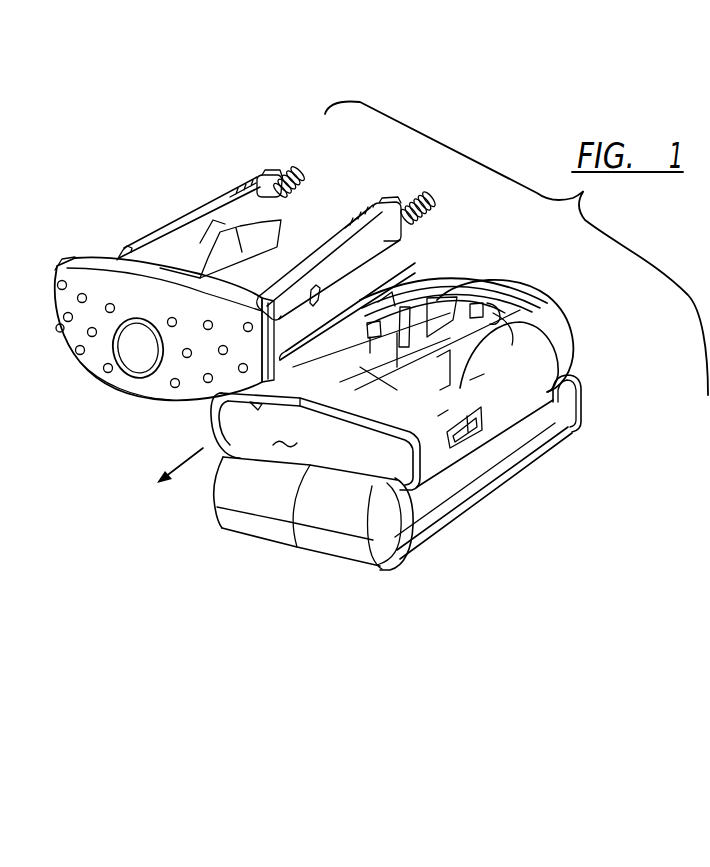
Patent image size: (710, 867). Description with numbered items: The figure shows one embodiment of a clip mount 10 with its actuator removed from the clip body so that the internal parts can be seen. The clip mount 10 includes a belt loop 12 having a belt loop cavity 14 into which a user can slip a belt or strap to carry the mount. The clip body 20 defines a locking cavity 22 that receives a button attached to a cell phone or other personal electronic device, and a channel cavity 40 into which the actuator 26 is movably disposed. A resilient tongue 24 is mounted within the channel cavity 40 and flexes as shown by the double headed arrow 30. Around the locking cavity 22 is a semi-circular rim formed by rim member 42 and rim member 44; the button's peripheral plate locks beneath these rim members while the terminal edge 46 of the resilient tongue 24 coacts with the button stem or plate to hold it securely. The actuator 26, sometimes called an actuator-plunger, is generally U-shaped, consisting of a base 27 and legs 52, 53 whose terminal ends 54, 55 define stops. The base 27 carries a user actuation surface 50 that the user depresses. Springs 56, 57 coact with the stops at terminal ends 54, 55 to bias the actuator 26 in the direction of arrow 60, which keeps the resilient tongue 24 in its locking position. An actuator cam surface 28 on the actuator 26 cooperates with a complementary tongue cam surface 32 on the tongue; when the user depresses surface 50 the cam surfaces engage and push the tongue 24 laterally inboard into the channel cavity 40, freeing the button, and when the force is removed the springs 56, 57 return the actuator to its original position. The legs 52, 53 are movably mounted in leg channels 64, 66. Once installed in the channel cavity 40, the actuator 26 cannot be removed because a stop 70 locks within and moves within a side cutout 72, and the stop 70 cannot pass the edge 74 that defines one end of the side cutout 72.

The clip mount 10 is at (264, 559).
The belt loop 12 is at (432, 538).
The belt loop cavity 14 is at (463, 478).
The clip body 20 is at (592, 333).
The locking cavity 22 is at (485, 368).
The resilient tongue 24 is at (382, 300).
The actuator 26 is at (150, 408).
The base 27 is at (80, 257).
The actuator cam surface 28 is at (268, 243).
The double headed arrow 30 is at (404, 306).
The tongue cam surface 32 is at (488, 320).
The channel cavity 40 is at (220, 490).
The rim member 42 is at (427, 300).
The rim member 44 is at (575, 432).
The terminal edge 46 is at (510, 420).
The user actuation surface 50 is at (97, 360).
The leg 52 is at (170, 230).
The leg 53 is at (330, 237).
The terminal end 54 is at (265, 175).
The terminal end 55 is at (399, 210).
The spring 56 is at (278, 170).
The spring 57 is at (432, 196).
The arrow 60 is at (184, 449).
The leg channel 64 is at (237, 424).
The leg channel 66 is at (396, 556).
The stop 70 is at (322, 298).
The side cutout 72 is at (477, 380).
The edge 74 is at (443, 413).